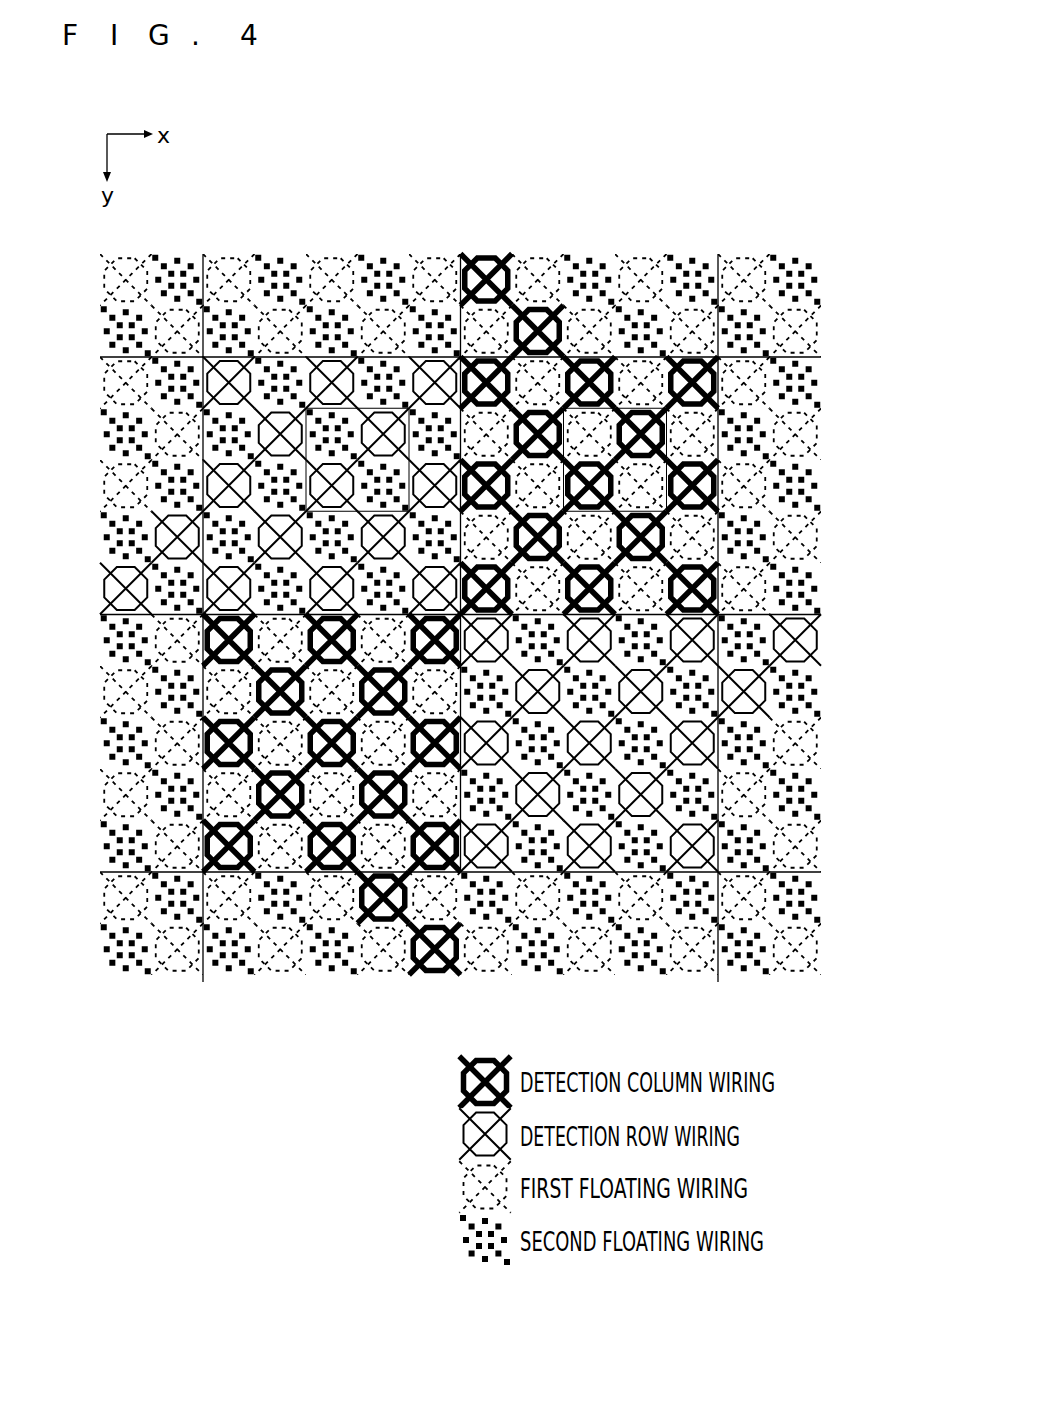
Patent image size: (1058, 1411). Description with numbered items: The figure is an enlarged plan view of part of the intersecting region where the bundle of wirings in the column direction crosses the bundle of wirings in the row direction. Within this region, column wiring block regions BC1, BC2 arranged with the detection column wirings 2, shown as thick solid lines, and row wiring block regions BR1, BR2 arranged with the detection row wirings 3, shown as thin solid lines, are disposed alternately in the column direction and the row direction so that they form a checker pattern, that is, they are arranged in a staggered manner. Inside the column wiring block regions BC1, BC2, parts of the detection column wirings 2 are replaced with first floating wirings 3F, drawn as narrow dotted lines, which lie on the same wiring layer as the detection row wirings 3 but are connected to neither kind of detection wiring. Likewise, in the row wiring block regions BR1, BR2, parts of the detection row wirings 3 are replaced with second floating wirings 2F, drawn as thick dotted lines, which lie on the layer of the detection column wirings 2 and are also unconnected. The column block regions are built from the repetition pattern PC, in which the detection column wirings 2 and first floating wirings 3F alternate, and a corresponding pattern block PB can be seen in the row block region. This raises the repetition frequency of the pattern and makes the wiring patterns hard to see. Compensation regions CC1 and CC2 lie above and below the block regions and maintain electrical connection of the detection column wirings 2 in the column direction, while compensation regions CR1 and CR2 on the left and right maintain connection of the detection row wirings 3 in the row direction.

The detection column wiring 2 is at (486, 256).
The detection row wiring 3 is at (104, 592).
The second floating wiring 2F is at (105, 645).
The first floating wiring 3F is at (433, 257).
The row wiring block region BR1 is at (261, 411).
The row wiring block region BR2 is at (620, 860).
The column wiring block region BC1 is at (590, 407).
The column wiring block region BC2 is at (307, 863).
The compensation region CR1 is at (105, 466).
The compensation region CR2 is at (808, 722).
The compensation region CC1 is at (615, 262).
The compensation region CC2 is at (355, 967).
The pixel block of row wiring PB is at (355, 408).
The repetition pattern PC is at (668, 408).